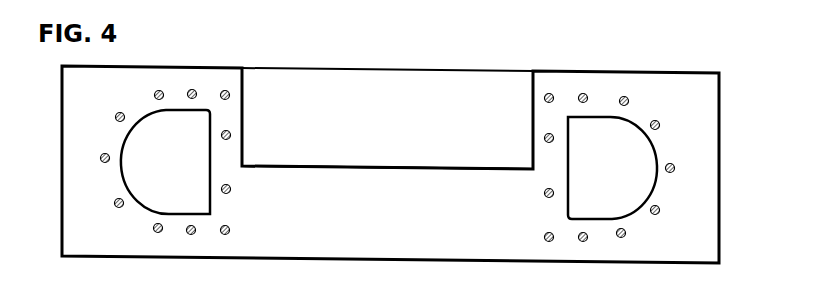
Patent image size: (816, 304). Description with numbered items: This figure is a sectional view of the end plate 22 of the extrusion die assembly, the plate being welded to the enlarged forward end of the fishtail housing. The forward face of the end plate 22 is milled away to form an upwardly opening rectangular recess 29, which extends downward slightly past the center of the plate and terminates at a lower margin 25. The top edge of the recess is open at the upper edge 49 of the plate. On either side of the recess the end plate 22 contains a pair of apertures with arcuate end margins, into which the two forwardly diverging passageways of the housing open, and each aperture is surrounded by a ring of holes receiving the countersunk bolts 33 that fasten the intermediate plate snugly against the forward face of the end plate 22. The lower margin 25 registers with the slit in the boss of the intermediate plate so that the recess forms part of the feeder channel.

The end plate 22 is at (330, 247).
The lower margin 25 is at (430, 170).
The notch 29 is at (278, 86).
The countersunk bolts 33 is at (194, 90).
The notch top edge 49 is at (418, 72).